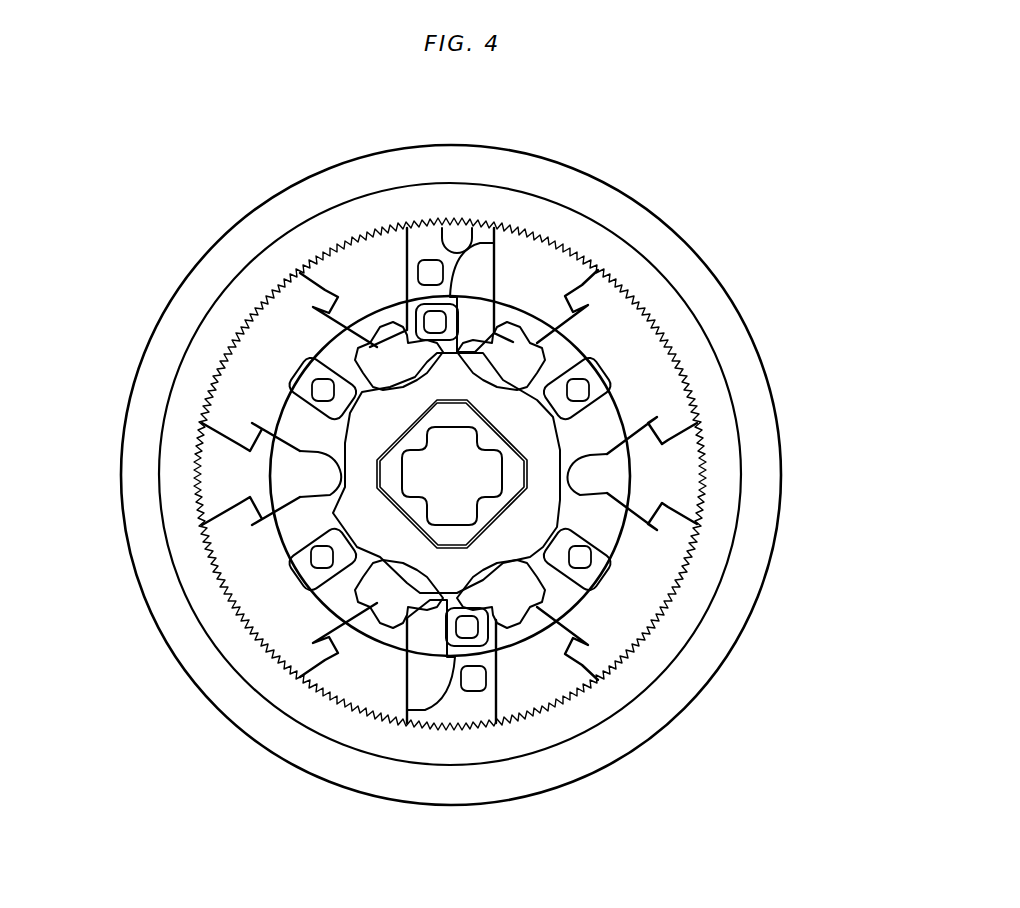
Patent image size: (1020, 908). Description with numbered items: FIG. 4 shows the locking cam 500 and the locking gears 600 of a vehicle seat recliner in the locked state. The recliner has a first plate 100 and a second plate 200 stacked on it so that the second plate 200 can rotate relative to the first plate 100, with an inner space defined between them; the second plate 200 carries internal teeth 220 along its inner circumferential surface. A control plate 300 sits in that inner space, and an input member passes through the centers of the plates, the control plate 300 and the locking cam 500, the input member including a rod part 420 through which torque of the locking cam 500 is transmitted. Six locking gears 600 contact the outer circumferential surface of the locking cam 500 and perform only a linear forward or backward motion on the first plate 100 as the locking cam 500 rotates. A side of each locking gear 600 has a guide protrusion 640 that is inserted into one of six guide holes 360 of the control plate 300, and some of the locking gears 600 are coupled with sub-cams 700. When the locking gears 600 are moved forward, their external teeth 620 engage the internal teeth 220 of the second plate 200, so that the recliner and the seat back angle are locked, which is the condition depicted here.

The first plate 100 is at (748, 380).
The second plate 200 is at (663, 296).
The internal teeth 220 is at (470, 245).
The control plate 300 is at (282, 405).
The guide hole 360 is at (388, 325).
The rod part 420 is at (453, 530).
The locking cam 500 is at (490, 555).
The locking gear 600 is at (425, 243).
The external teeth 620 is at (718, 460).
The guide protrusion 640 is at (437, 323).
The sub-cam 700 is at (480, 283).